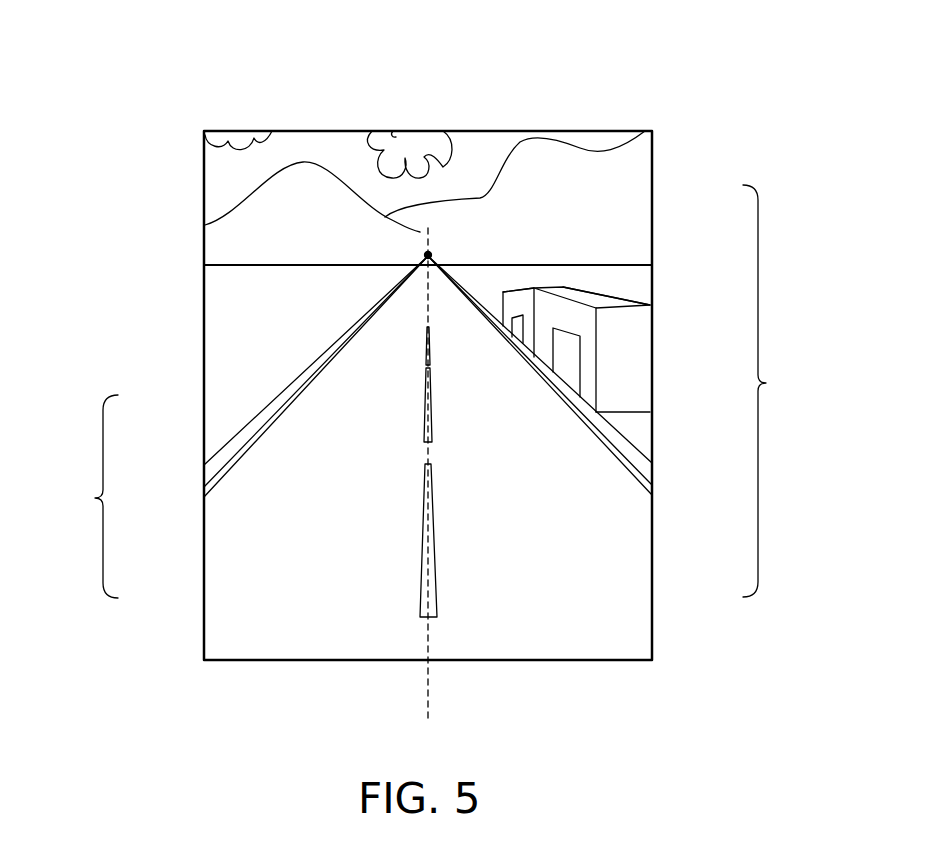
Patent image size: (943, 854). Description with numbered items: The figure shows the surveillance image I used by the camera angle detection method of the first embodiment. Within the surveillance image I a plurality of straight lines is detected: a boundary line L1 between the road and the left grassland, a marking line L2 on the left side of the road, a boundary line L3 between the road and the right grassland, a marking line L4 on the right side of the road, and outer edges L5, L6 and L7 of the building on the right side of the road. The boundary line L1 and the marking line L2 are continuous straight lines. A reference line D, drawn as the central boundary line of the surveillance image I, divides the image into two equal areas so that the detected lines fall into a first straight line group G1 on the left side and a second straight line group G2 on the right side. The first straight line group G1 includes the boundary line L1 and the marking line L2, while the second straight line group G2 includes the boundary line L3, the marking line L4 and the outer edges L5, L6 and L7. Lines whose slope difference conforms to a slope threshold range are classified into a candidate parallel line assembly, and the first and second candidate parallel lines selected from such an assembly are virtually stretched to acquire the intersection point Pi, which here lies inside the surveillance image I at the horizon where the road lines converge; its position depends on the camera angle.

The surveillance image I is at (692, 80).
The intersection point Pi is at (431, 254).
The reference line D is at (443, 477).
The boundary line L1 is at (235, 437).
The marking line L2 is at (248, 450).
The boundary line L3 is at (620, 434).
The marking line L4 is at (607, 449).
The outer edge L5 is at (610, 296).
The outer edge L6 is at (565, 298).
The outer edge L7 is at (518, 301).
The first straight line group G1 is at (95, 498).
The second straight line group G2 is at (766, 383).